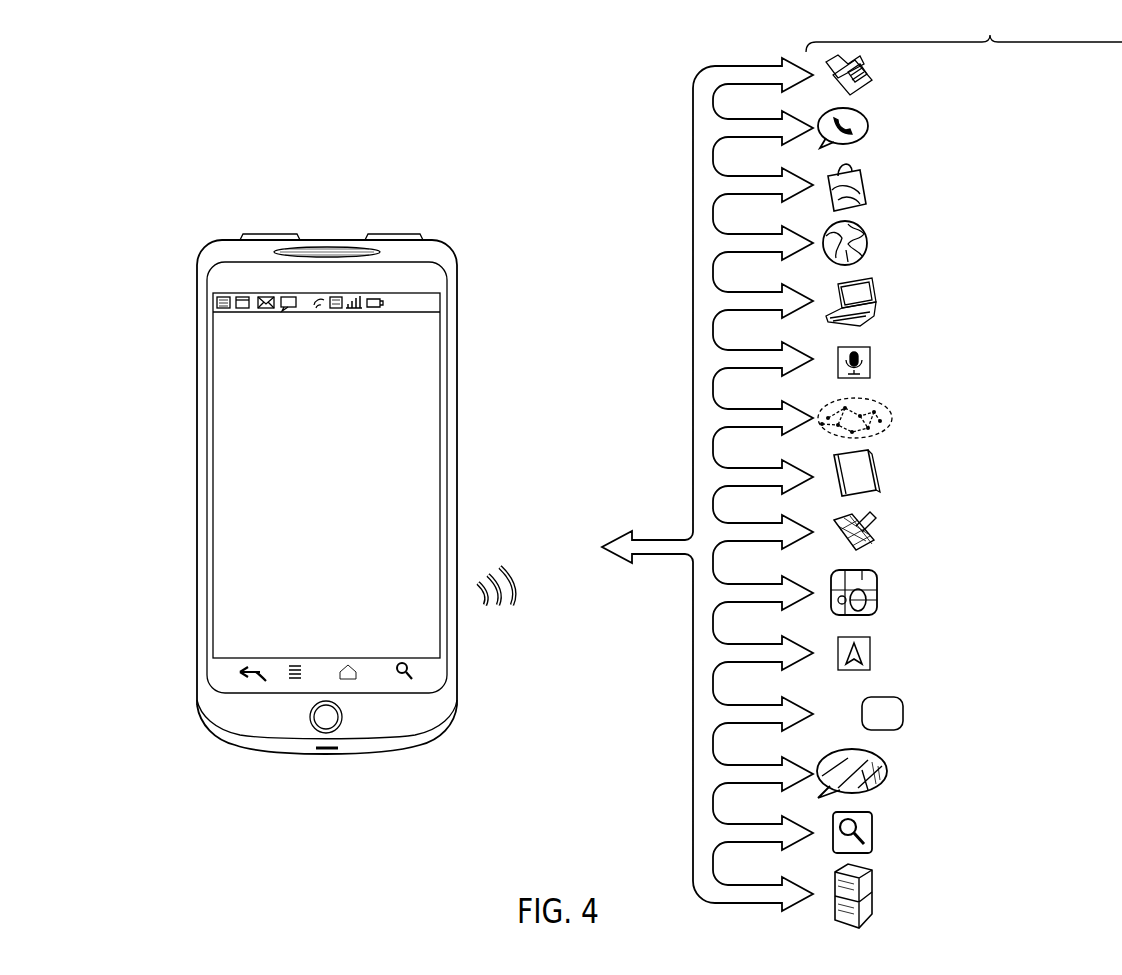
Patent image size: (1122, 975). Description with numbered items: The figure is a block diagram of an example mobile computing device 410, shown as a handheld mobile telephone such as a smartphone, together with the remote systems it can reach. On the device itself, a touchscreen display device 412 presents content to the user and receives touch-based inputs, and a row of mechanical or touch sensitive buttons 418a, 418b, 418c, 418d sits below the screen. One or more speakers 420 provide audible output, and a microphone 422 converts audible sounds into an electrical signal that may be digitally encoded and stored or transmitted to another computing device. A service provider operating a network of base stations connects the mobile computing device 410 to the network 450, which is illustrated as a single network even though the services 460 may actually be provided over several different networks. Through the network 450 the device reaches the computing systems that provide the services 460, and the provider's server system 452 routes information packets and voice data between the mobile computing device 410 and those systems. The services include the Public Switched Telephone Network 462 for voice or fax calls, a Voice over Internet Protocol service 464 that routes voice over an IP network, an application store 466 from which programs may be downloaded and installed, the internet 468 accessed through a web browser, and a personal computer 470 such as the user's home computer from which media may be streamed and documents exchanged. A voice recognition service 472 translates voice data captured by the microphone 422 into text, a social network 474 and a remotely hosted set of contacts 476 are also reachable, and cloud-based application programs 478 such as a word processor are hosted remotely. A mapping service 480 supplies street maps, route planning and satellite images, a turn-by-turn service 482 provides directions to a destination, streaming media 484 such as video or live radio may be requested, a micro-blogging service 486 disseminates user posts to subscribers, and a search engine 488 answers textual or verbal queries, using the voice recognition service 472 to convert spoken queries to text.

The mobile computing device 410 is at (387, 173).
The touchscreen display device 412 is at (440, 485).
The button 418a is at (252, 666).
The button 418b is at (295, 662).
The button 418c is at (348, 664).
The button 418d is at (407, 661).
The speakers 420 is at (332, 246).
The microphone 422 is at (327, 757).
The network 450 is at (700, 820).
The server system 452 is at (874, 890).
The services 460 is at (964, 459).
The Public Switched Telephone Network 462 is at (870, 82).
The Voice over Internet Protocol service 464 is at (868, 128).
The application store 466 is at (866, 184).
The internet 468 is at (868, 250).
The personal computer 470 is at (877, 296).
The voice recognition service 472 is at (870, 354).
The social network 474 is at (886, 406).
The contacts 476 is at (874, 476).
The cloud-based application programs 478 is at (874, 534).
The mapping service 480 is at (876, 584).
The turn-by-turn service 482 is at (870, 648).
The streaming media 484 is at (904, 710).
The micro-blogging service 486 is at (887, 772).
The search engine 488 is at (874, 830).